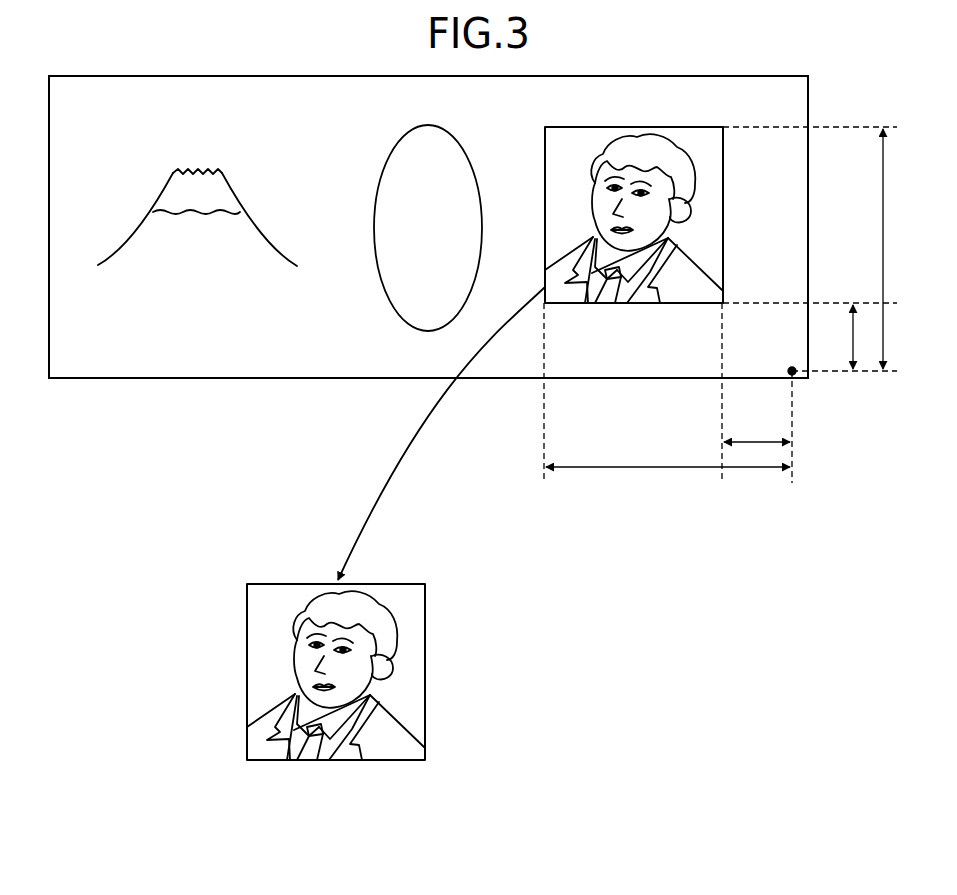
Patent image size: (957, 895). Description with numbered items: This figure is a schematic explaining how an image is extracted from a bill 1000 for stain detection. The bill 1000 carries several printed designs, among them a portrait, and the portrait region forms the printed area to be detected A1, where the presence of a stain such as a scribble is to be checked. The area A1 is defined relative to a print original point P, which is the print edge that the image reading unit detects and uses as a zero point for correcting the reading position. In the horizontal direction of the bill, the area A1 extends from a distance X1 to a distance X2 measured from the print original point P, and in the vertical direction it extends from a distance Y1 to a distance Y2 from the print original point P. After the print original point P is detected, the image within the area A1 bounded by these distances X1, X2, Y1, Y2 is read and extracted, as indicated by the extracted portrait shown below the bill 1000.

The bill 1000 is at (428, 227).
The printed area to be detected A1 is at (578, 127).
The print original point P is at (792, 367).
The distance X1 is at (757, 430).
The distance X2 is at (668, 454).
The distance Y1 is at (838, 337).
The distance Y2 is at (865, 249).